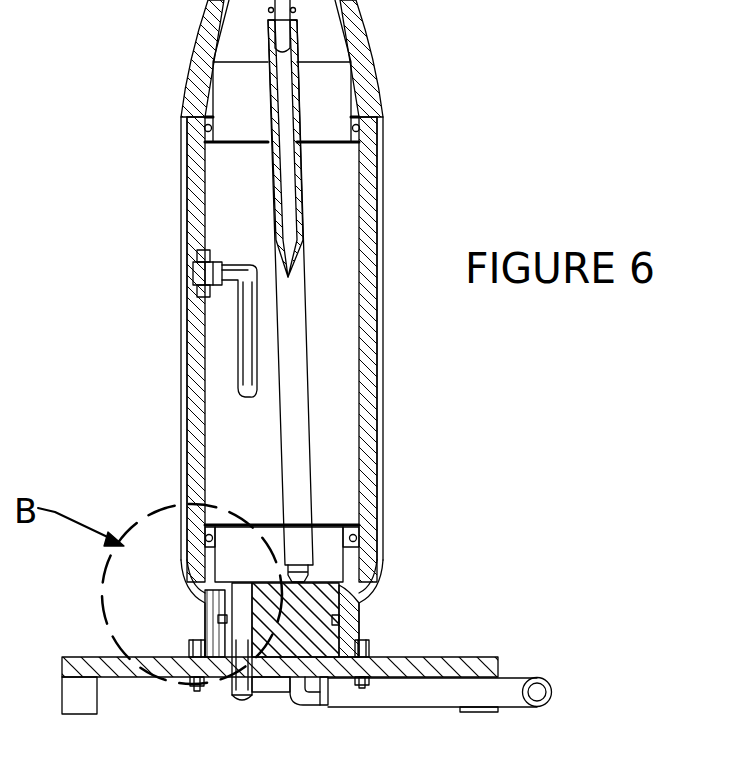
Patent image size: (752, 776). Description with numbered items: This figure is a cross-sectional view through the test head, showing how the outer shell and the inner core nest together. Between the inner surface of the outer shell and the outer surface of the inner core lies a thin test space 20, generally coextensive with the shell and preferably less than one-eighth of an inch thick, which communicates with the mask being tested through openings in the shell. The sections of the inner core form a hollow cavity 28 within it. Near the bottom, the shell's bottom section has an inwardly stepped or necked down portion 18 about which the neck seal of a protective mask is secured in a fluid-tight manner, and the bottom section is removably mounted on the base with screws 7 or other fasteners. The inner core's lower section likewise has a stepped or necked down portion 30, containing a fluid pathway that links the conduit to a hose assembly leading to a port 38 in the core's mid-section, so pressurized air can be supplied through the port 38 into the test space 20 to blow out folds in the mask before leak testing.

The test space 20 is at (203, 22).
The hollow cavity 28 is at (327, 453).
The port 38 is at (188, 280).
The inwardly stepped or necked down portion 18 is at (203, 612).
The stepped or necked down portion 30 is at (365, 628).
The screws 7 is at (197, 693).